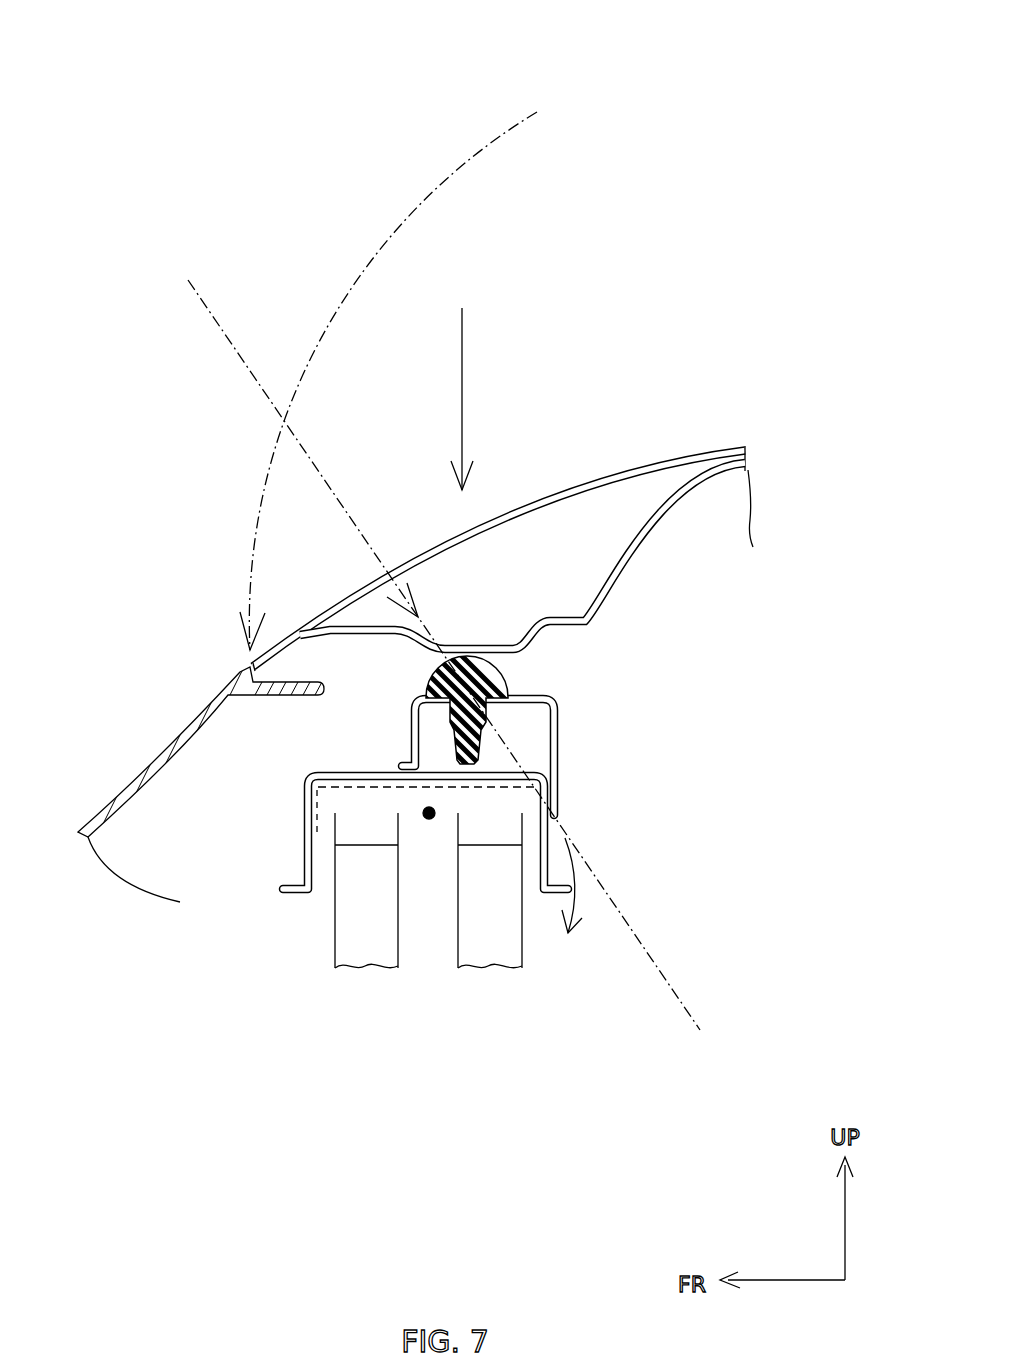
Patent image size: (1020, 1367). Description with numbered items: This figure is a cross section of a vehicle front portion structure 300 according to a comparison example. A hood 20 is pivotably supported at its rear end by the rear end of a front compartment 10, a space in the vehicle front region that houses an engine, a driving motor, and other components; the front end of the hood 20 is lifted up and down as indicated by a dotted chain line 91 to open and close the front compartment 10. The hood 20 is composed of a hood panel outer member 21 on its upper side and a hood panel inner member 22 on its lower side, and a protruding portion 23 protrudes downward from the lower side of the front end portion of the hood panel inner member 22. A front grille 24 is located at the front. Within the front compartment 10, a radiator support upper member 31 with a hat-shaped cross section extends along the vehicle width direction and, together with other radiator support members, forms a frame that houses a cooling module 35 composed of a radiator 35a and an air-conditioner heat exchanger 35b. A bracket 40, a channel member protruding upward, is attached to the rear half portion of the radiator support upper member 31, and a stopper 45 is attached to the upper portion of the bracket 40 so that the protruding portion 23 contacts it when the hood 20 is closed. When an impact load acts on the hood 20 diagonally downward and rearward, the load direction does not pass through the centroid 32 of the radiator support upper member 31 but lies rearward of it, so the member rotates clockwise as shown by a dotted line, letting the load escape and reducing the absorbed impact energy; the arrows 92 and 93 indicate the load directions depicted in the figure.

The front compartment 10 is at (767, 951).
The hood 20 is at (568, 467).
The hood panel outer member 21 is at (687, 454).
The hood panel inner member 22 is at (591, 561).
The protruding portion 23 is at (513, 658).
The front grille 24 is at (143, 752).
The radiator support upper member 31 is at (566, 842).
The centroid 32 is at (429, 820).
The cooling module 35 is at (482, 985).
The radiator 35a is at (493, 968).
The air-conditioner heat exchanger 35b is at (367, 968).
The bracket 40 is at (568, 733).
The stopper 45 is at (508, 678).
The dotted chain line 91 is at (452, 162).
The downward load 92 is at (463, 368).
The oblique load direction 93 is at (343, 500).
The vehicle front portion structure 300 is at (165, 198).